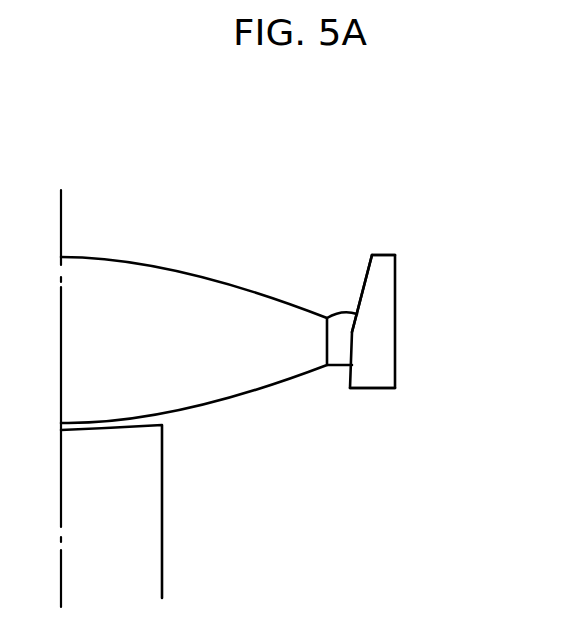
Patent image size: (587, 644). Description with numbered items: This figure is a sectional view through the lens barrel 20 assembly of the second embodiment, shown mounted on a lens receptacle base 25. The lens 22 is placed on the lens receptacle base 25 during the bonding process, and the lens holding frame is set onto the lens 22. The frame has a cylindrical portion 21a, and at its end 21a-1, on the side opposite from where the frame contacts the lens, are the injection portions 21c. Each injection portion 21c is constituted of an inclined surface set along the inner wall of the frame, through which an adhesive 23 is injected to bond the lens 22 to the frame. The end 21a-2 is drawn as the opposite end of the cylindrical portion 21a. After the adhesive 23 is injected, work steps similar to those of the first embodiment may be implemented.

The lens barrel 20 is at (433, 156).
The lens 22 is at (137, 283).
The adhesive 23 is at (338, 360).
The cylindrical portion 21a is at (378, 344).
The end of cylindrical portion 21a-1 is at (386, 254).
The lower end surface of holding member 21a-2 is at (377, 389).
The injection portion 21c is at (363, 283).
The lens receptacle base 25 is at (145, 543).